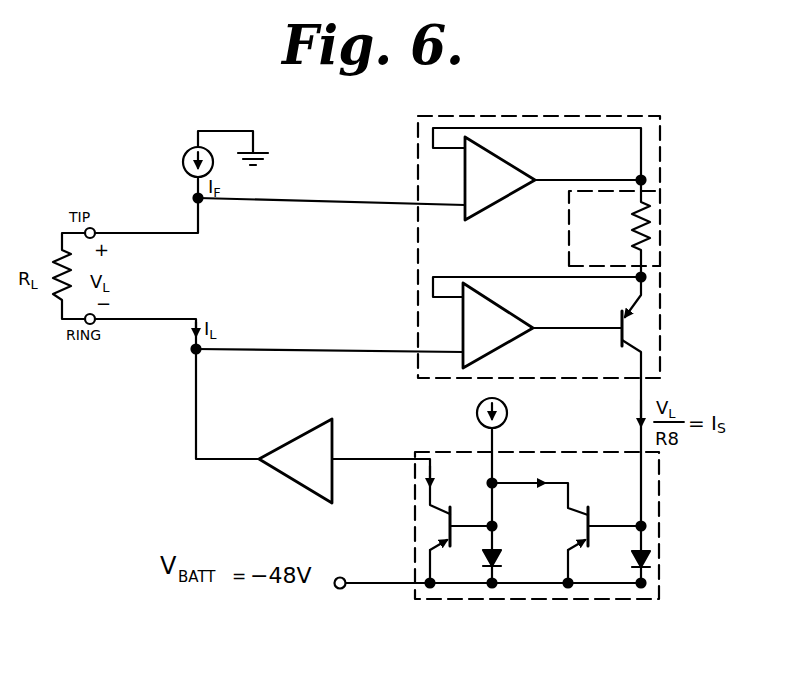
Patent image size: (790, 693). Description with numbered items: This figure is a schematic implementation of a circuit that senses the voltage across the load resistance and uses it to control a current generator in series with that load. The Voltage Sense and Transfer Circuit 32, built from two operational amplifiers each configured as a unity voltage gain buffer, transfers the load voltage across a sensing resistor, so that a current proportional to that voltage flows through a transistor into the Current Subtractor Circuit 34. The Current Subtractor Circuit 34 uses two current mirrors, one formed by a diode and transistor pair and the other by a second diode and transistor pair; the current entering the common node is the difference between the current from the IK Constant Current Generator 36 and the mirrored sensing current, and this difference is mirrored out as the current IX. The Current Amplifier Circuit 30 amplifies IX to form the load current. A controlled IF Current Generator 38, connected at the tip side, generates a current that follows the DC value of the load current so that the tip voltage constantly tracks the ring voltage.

The Current Amplifier Circuit 30 is at (312, 495).
The Voltage Sense and Transfer Circuit 32 is at (413, 227).
The Current Subtractor Circuit 34 is at (622, 604).
The IK Constant Current Generator 36 is at (477, 411).
The IF Current Generator 38 is at (190, 148).